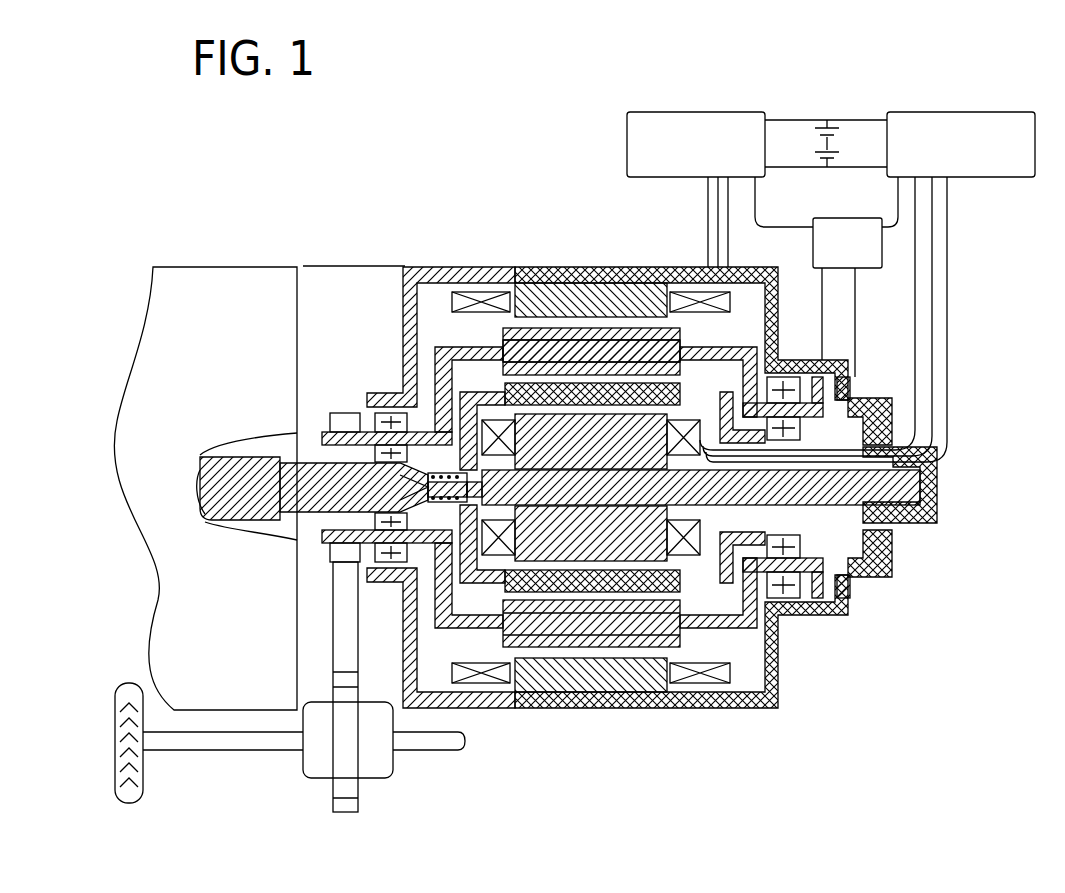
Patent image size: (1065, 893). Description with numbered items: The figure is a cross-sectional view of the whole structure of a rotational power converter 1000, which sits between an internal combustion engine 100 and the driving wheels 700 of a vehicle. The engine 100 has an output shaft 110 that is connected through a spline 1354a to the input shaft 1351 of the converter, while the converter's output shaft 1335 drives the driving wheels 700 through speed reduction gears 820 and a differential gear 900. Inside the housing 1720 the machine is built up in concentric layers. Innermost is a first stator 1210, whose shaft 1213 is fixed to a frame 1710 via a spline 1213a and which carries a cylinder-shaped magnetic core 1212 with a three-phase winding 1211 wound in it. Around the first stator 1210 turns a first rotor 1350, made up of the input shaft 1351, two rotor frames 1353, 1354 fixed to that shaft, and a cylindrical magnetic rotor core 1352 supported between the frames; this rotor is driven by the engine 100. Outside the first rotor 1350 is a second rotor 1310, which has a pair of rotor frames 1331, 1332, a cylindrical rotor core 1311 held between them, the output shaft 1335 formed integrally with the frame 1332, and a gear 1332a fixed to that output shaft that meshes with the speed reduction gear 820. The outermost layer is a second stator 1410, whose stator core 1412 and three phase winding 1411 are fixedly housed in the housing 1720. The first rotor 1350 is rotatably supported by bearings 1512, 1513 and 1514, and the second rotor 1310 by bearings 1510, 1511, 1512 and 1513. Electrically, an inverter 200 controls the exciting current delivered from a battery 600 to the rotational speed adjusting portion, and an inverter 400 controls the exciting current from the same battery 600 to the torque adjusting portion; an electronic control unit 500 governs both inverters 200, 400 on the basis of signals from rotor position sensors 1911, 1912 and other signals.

The internal combustion engine 100 is at (167, 371).
The output shaft 110 is at (206, 514).
The inverter 200 is at (943, 112).
The inverter 400 is at (683, 112).
The electronic control unit 500 is at (882, 245).
The battery 600 is at (810, 120).
The driving wheels 700 is at (113, 800).
The speed reduction gears 820 is at (340, 645).
The differential gear 900 is at (318, 785).
The rotational power converter 1000 is at (335, 262).
The first stator 1210 is at (591, 619).
The three-phase winding 1211 is at (548, 537).
The magnetic core 1212 is at (583, 533).
The shaft 1213 is at (710, 500).
The spline 1213a is at (902, 525).
The second rotor 1310 is at (593, 633).
The rotor core 1311 is at (653, 592).
The rotor frame 1331 is at (765, 625).
The rotor frame 1332 is at (453, 620).
The gear 1332a is at (333, 423).
The output shaft 1335 is at (292, 543).
The first rotor 1350 is at (577, 333).
The input shaft 1351 is at (270, 536).
The magnetic rotor core 1352 is at (588, 388).
The rotor frame 1353 is at (613, 393).
The rotor frame 1354 is at (402, 273).
The spline 1354a is at (264, 518).
The second stator 1410 is at (579, 425).
The three phase winding 1411 is at (477, 293).
The stator core 1412 is at (530, 296).
The bearing 1510 is at (800, 618).
The bearing 1511 is at (387, 410).
The bearing 1512 is at (850, 583).
The bearing 1513 is at (345, 412).
The bearing 1514 is at (435, 506).
The frame 1710 is at (935, 515).
The housing 1720 is at (430, 267).
The rotor position sensor 1911 is at (892, 418).
The rotor position sensor 1912 is at (852, 382).